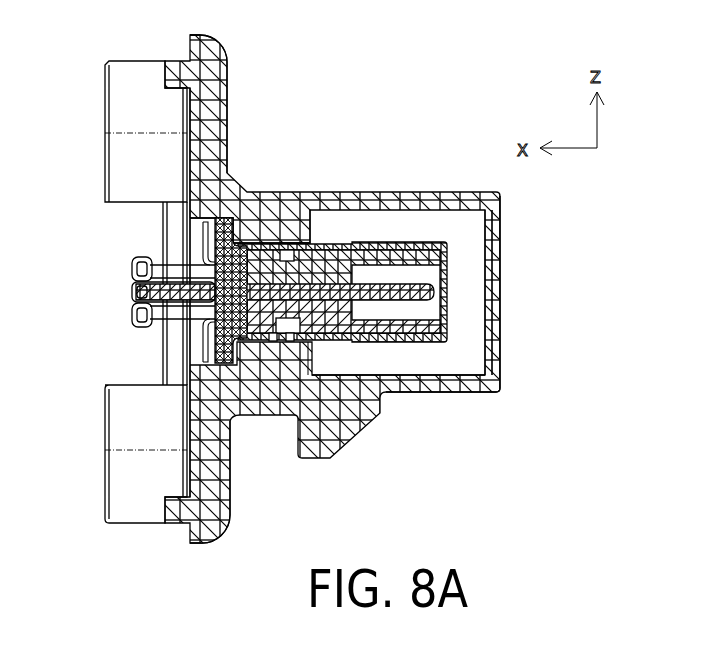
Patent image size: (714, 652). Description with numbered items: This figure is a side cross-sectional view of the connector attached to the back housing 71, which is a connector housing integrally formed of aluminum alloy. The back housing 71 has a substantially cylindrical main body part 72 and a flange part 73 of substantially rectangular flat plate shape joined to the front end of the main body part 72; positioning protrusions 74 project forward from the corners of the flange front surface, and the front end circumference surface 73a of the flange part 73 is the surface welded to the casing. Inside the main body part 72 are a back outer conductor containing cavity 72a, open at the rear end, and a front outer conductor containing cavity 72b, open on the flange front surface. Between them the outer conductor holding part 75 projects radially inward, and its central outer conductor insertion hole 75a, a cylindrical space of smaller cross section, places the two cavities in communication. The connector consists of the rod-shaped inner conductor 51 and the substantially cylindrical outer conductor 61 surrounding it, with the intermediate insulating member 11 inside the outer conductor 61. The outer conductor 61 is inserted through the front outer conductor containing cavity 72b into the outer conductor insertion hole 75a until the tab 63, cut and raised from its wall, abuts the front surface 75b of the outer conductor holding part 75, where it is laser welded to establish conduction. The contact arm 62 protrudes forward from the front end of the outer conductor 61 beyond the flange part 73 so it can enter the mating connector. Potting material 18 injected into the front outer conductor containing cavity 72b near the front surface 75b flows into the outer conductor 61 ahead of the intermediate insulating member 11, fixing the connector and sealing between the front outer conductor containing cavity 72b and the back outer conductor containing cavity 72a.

The intermediate insulating member 11 is at (420, 243).
The potting material 18 is at (210, 343).
The inner conductor 51 is at (338, 340).
The outer conductor 61 is at (336, 244).
The contact arm 62 is at (155, 252).
The tab 63 is at (222, 372).
The back housing 71 is at (457, 394).
The main body part 72 is at (345, 192).
The back outer conductor containing cavity 72a is at (468, 228).
The front outer conductor containing cavity 72b is at (207, 233).
The flange part 73 is at (224, 45).
The front end circumference surface 73a is at (190, 48).
The positioning protrusion 74 is at (112, 60).
The outer conductor holding part 75 is at (270, 240).
The outer conductor insertion hole 75a is at (302, 241).
The front surface of the outer conductor holding part 75b is at (244, 232).